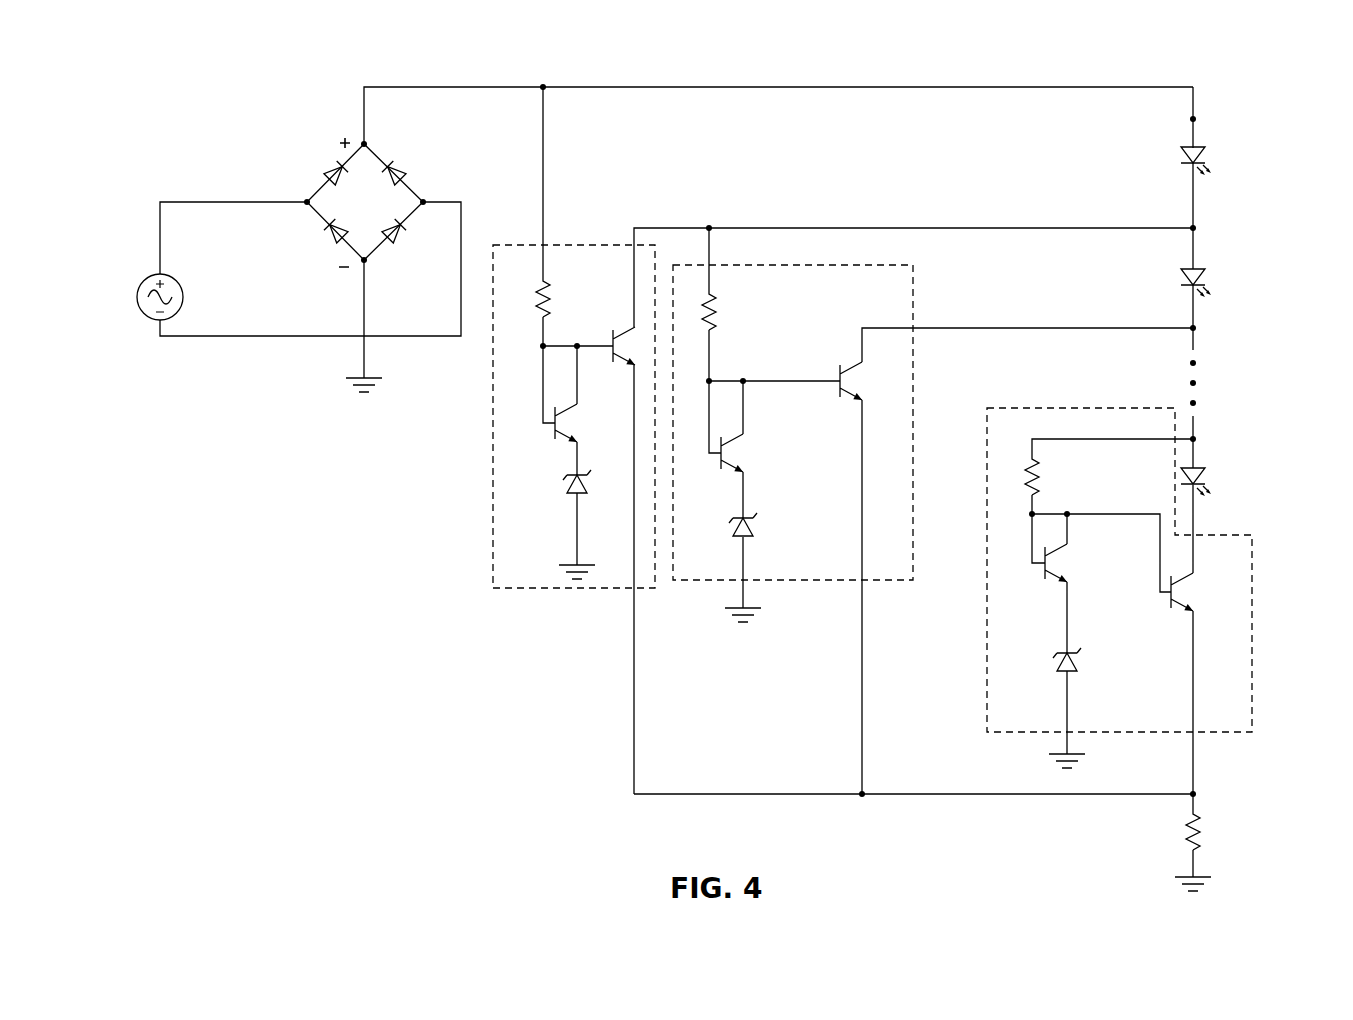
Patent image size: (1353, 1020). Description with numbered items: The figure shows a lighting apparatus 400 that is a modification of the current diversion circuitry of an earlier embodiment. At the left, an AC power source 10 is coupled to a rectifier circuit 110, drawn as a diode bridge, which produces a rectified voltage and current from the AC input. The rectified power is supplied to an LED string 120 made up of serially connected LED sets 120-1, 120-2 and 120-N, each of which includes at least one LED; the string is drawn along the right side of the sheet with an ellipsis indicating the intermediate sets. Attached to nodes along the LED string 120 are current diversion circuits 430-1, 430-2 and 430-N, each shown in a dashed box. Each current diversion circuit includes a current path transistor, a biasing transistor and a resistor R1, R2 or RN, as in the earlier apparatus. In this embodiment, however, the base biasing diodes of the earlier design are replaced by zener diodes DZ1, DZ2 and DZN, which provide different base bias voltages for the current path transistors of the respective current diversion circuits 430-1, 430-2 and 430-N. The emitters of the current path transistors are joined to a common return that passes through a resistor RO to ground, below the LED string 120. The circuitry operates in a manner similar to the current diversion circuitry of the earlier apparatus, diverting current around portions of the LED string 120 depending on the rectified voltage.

The lighting apparatus 400 is at (200, 60).
The AC power source 10 is at (137, 297).
The rectifier circuit 110 is at (300, 155).
The LED string 120 is at (1208, 122).
The LED set 120-1 is at (1217, 152).
The LED set 120-2 is at (1217, 275).
The LED set 120-N is at (1215, 473).
The current diversion circuit 430-1 is at (578, 244).
The current diversion circuit 430-2 is at (823, 263).
The current diversion circuit 430-N is at (1058, 407).
The resistor R1 is at (560, 297).
The resistor R2 is at (726, 310).
The resistor RN is at (1052, 475).
The output resistor RO is at (1207, 842).
The zener diode DZ1 is at (550, 484).
The zener diode DZ2 is at (767, 528).
The zener diode DZN is at (1093, 661).